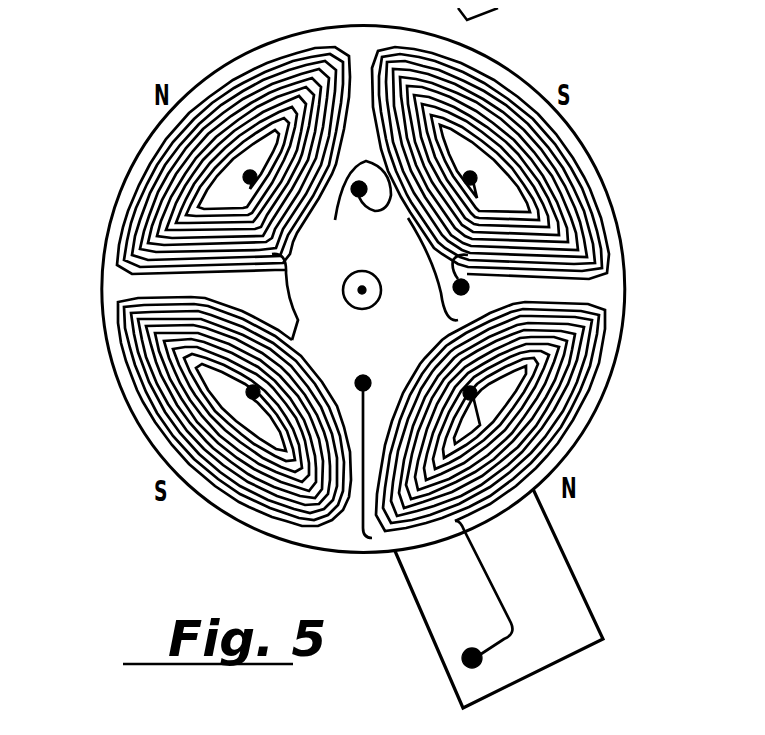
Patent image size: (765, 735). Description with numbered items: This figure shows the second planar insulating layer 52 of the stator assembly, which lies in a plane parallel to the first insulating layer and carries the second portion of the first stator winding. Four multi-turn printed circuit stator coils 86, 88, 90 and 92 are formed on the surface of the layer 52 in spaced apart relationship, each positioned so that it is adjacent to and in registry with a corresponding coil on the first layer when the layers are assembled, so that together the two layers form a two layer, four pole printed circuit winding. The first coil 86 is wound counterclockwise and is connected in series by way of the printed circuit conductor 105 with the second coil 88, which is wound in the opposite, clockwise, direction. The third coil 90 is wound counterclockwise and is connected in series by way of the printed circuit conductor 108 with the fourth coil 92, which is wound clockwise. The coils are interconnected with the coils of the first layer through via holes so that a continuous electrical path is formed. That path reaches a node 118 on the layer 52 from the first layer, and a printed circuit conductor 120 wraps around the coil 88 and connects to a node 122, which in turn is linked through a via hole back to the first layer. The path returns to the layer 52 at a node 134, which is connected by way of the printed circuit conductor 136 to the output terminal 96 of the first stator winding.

The second planar insulating layer 52 is at (611, 222).
The third coil of the second layer 90 is at (250, 53).
The second coil of the second layer 88 is at (579, 147).
The fourth coil of the second layer 92 is at (221, 490).
The first coil of the second layer 86 is at (579, 412).
The printed circuit conductor 120 is at (350, 207).
The node 118 is at (349, 190).
The printed circuit conductor 105 is at (423, 247).
The node 122 is at (445, 285).
The printed circuit conductor 108 is at (290, 313).
The node 134 is at (355, 367).
The printed circuit conductor 136 is at (496, 583).
The output terminal 96 is at (455, 650).